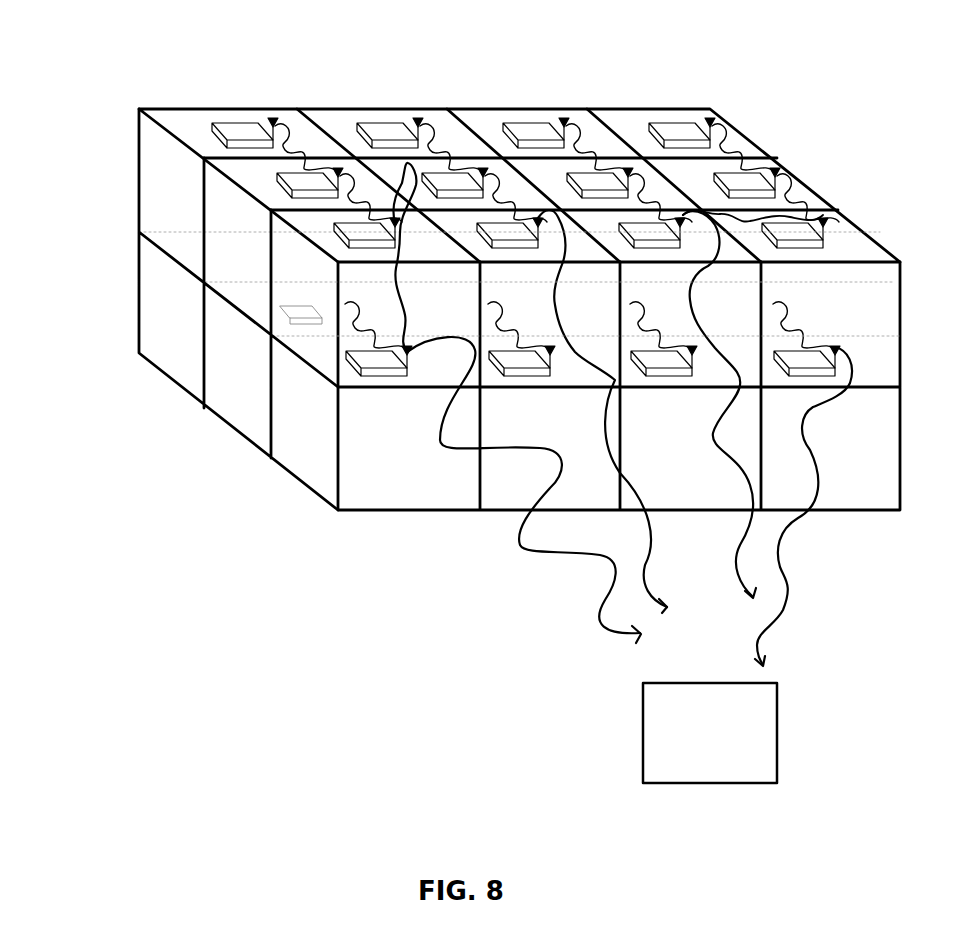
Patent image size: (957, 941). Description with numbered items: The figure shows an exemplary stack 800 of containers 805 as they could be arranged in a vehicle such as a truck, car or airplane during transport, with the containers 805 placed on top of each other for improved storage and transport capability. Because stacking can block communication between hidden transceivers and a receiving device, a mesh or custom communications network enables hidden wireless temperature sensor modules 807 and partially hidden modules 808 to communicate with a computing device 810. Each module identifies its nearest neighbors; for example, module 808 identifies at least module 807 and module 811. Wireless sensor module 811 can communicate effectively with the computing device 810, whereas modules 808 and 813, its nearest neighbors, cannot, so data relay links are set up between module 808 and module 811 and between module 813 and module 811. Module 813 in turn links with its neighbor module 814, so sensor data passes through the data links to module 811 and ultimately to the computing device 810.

The stack 800 is at (253, 73).
The container 805 is at (147, 182).
The hidden wireless temperature sensor module 807 is at (462, 303).
The partially hidden wireless temperature sensor module 808 is at (317, 310).
The computing device 810 is at (737, 743).
The wireless sensor module 811 is at (367, 370).
The wireless temperature sensor module 813 is at (362, 237).
The wireless temperature sensor module 814 is at (305, 195).